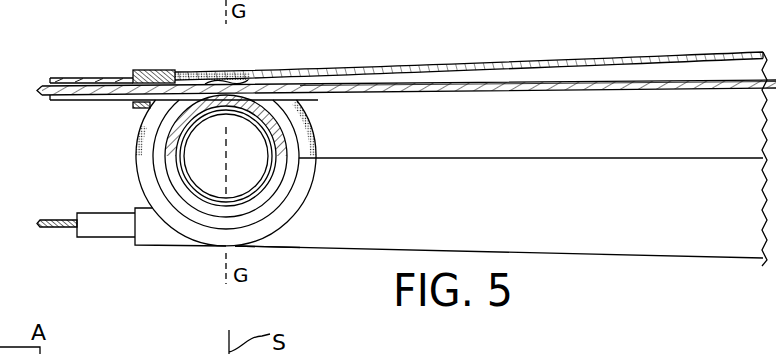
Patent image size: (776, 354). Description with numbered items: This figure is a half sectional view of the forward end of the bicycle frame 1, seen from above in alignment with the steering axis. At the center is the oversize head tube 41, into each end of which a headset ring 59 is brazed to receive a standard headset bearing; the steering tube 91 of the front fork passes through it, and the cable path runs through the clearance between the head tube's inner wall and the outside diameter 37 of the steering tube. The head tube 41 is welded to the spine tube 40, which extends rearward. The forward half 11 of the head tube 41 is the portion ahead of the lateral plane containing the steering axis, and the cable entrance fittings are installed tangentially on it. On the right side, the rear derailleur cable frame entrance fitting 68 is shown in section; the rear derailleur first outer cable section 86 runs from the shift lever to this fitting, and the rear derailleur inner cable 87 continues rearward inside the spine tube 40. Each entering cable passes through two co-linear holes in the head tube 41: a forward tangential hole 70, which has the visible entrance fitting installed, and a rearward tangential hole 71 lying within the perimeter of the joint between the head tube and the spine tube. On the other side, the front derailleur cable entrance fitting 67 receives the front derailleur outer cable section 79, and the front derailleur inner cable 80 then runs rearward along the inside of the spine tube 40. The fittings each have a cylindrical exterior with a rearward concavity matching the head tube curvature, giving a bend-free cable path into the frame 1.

The frame 1 is at (731, 276).
The forward half of the head tube 11 is at (135, 158).
The outside diameter of the steering tube 37 is at (252, 111).
The spine tube 40 is at (655, 258).
The head tube 41 is at (297, 215).
The headset rings 59 is at (145, 175).
The front derailleur cable entrance fitting 67 is at (140, 249).
The rear derailleur cable frame entrance fitting 68 is at (145, 71).
The forward tangential hole 70 is at (227, 76).
The rearward tangential hole 71 is at (238, 78).
The front derailleur outer cable section 79 is at (87, 238).
The front derailleur inner cable 80 is at (45, 228).
The rear derailleur first outer cable section 86 is at (55, 104).
The rear derailleur inner cable 87 is at (462, 90).
The steering tube 91 is at (183, 141).